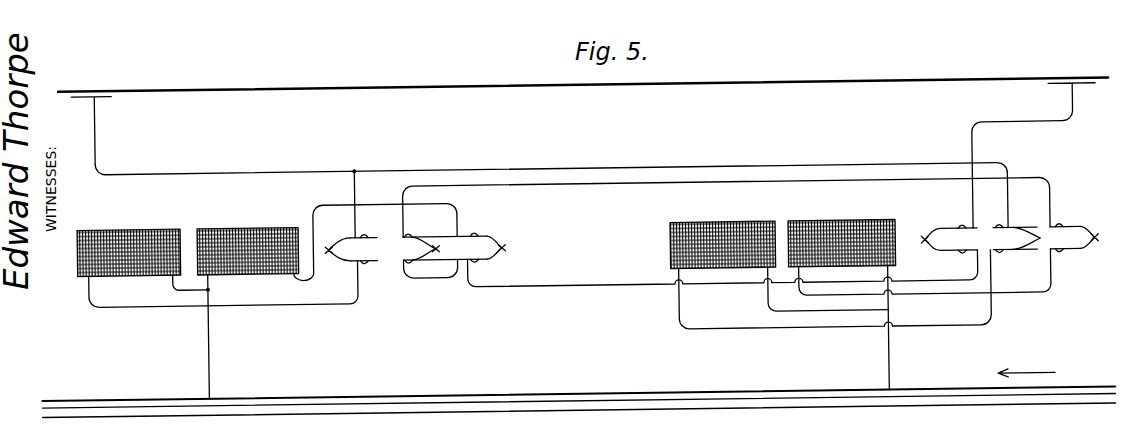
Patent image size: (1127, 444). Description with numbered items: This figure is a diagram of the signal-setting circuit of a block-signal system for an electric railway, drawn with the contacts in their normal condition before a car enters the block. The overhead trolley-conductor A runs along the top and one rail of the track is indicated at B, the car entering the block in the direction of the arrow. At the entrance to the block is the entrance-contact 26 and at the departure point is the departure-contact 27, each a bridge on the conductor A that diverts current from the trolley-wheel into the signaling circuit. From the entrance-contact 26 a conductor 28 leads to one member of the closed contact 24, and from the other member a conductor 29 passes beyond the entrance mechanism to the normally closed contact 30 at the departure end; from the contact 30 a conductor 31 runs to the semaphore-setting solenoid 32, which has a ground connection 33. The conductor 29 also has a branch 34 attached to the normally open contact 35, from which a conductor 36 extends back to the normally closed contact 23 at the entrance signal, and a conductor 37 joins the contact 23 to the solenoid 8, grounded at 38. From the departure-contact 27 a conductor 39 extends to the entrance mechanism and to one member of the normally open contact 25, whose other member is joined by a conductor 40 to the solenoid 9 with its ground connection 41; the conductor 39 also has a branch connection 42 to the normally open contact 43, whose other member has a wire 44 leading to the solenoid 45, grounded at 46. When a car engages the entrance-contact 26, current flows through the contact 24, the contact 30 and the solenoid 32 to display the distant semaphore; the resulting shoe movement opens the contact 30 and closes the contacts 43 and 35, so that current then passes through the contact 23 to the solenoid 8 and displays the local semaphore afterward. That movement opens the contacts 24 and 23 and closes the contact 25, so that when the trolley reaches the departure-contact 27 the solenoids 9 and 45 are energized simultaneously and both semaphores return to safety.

The overhead trolley-conductor A is at (523, 86).
The track rail B is at (445, 402).
The departure-contact 27 is at (82, 93).
The entrance-contact 26 is at (1093, 93).
The conductor 28 is at (998, 126).
The conductor 39 is at (152, 168).
The conductor 36 is at (532, 184).
The solenoid 45 is at (128, 225).
The semaphore-setting solenoid 32 is at (258, 224).
The solenoid 9 is at (714, 223).
The solenoid 8 is at (860, 223).
The ground connection 46 is at (168, 286).
The ground connection 33 is at (207, 347).
The wire 44 is at (335, 302).
The conductor 31 is at (372, 201).
The branch connection 42 is at (353, 188).
The normally open contact 43 is at (350, 235).
The normally open contact 35 is at (432, 229).
The branch conductor 34 is at (423, 277).
The normally closed contact 30 is at (503, 250).
The conductor 29 is at (550, 287).
The ground connection 41 is at (765, 311).
The ground connection 38 is at (889, 359).
The conductor 37 is at (1023, 301).
The conductor 40 is at (992, 281).
The closed contact 24 is at (945, 222).
The normally open contact 25 is at (1013, 231).
The normally closed contact 23 is at (1067, 224).